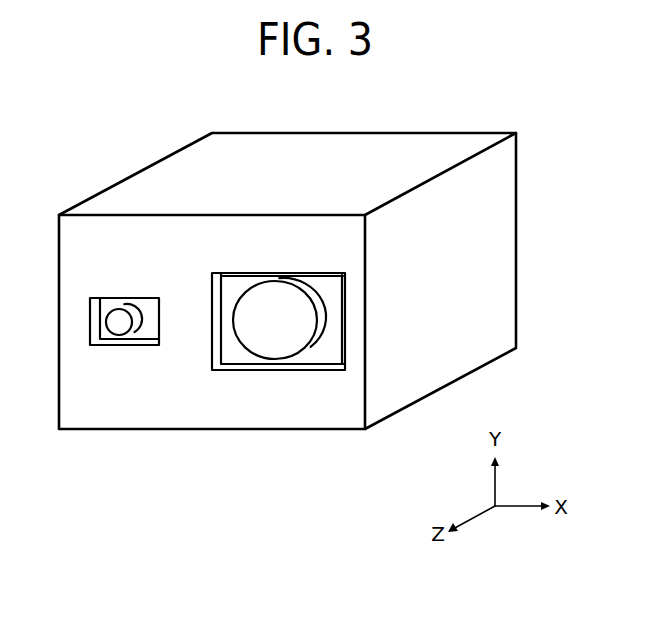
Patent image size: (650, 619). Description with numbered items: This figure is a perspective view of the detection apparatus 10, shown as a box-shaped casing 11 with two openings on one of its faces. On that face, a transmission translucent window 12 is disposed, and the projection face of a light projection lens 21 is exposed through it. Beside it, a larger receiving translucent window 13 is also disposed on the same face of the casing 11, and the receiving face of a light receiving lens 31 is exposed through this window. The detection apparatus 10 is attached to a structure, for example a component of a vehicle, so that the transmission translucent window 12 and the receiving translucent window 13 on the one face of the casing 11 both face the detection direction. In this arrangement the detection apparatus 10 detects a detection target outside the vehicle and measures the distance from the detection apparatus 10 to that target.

The detection apparatus 10 is at (313, 243).
The casing 11 is at (518, 243).
The transmission translucent window 12 is at (130, 329).
The receiving translucent window 13 is at (278, 324).
The light projection lens 21 is at (117, 337).
The light receiving lens 31 is at (270, 360).